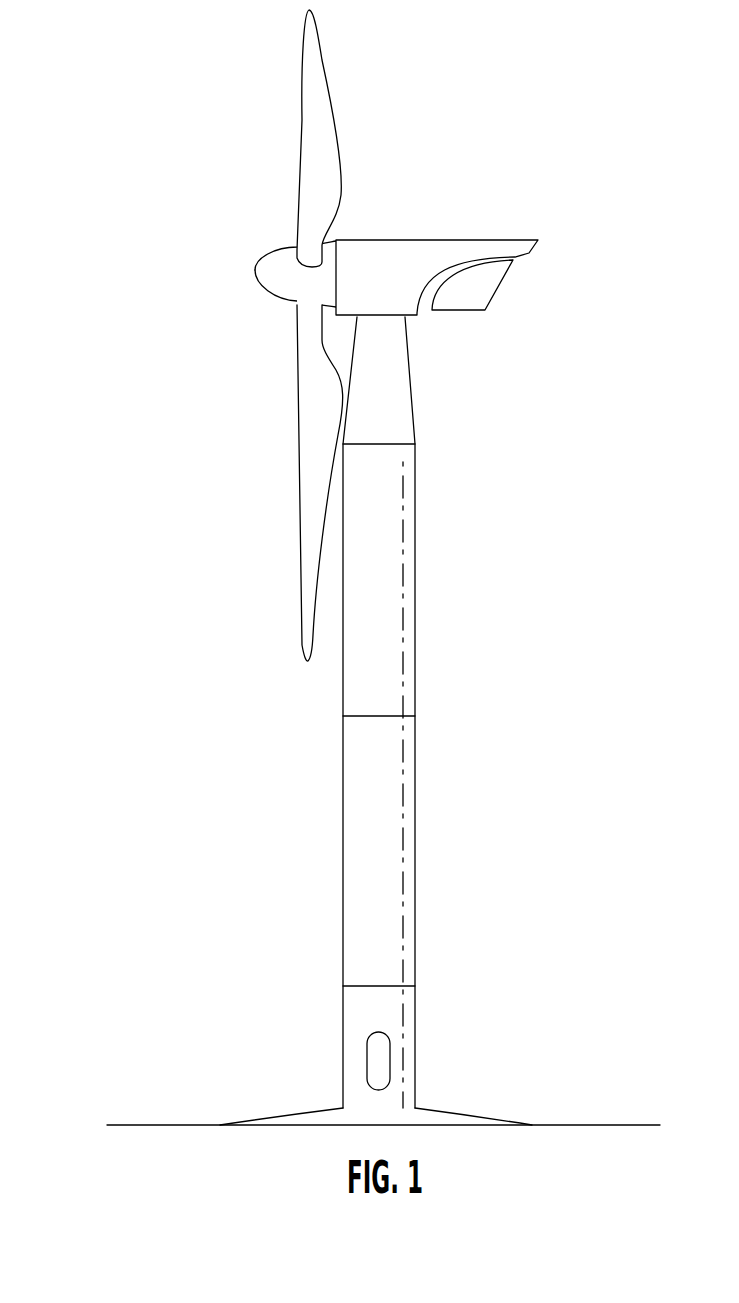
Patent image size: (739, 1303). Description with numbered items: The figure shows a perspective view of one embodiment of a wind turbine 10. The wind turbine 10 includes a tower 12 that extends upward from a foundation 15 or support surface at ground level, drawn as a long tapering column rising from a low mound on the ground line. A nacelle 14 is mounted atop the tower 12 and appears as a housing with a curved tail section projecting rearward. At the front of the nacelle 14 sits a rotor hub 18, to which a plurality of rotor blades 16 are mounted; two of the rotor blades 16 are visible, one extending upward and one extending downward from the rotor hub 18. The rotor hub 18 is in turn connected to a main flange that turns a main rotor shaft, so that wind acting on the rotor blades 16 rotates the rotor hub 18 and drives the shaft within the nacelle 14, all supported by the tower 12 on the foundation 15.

The wind turbine 10 is at (183, 123).
The tower 12 is at (356, 815).
The nacelle 14 is at (424, 252).
The foundation 15 is at (147, 1125).
The rotor blades 16 is at (312, 117).
The rotor hub 18 is at (270, 270).